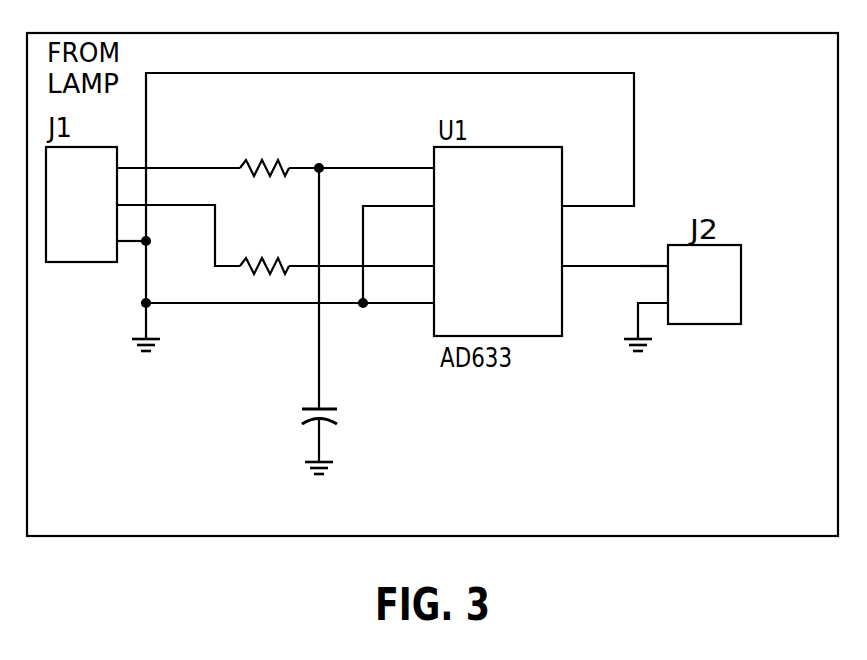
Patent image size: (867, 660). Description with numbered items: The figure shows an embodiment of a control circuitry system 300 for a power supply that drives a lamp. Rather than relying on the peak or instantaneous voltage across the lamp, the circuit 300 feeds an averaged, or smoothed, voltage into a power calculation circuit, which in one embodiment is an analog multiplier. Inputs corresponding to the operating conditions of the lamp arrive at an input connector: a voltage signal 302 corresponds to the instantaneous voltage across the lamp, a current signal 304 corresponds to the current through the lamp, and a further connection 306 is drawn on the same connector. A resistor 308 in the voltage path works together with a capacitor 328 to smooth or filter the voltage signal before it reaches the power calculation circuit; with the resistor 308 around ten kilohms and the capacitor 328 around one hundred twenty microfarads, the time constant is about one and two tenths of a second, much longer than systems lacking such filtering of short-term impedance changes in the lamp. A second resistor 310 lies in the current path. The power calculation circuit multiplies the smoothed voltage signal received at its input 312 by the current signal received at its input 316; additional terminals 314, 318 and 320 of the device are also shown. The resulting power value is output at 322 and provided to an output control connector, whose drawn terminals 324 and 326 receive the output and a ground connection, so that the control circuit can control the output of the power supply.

The control circuitry system 300 is at (758, 488).
The voltage signal 302 is at (156, 170).
The current signal 304 is at (156, 228).
The J1 connector pin / ground 306 is at (111, 242).
The resistor 308 is at (276, 164).
The resistor 310 is at (274, 262).
The smoothed voltage signal input 312 is at (361, 154).
The multiplier U1 input pin 314 is at (398, 190).
The current signal input 316 is at (361, 250).
The multiplier U1 input pin 318 is at (398, 287).
The multiplier U1 supply/feedback pin 320 is at (598, 189).
The power calculation output 322 is at (615, 250).
The J2 connector pin / output 324 is at (678, 268).
The J2 connector pin / ground 326 is at (670, 320).
The capacitor 328 is at (316, 407).